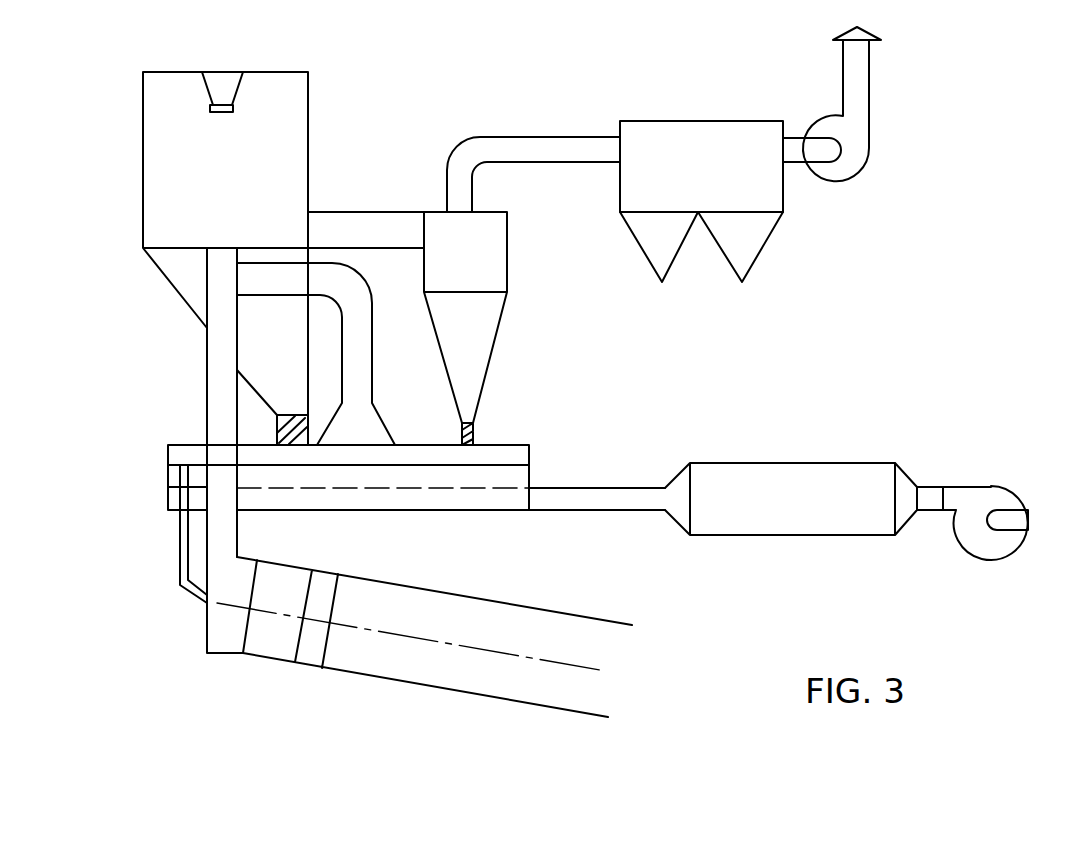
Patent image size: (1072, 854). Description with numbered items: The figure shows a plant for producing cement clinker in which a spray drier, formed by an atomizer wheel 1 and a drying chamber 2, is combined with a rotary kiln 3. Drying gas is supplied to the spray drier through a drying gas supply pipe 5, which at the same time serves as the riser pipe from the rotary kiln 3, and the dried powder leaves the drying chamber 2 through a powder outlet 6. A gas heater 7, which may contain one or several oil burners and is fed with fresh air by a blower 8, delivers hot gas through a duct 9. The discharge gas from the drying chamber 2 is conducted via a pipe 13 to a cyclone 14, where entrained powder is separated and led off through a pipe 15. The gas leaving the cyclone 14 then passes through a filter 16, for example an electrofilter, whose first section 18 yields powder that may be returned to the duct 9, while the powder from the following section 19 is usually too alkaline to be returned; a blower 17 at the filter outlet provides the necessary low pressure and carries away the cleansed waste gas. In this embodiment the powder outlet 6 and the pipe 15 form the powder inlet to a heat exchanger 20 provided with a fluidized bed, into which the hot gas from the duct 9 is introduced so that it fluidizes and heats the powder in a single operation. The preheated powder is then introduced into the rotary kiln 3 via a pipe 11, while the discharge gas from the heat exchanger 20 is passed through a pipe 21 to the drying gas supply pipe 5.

The atomizer wheel 1 is at (232, 78).
The drying chamber 2 is at (300, 134).
The rotary kiln 3 is at (403, 606).
The drying gas supply pipe 5 is at (214, 357).
The powder outlet 6 is at (278, 435).
The gas heater 7 is at (823, 472).
The blower 8 is at (996, 496).
The duct 9 is at (571, 504).
The pipe 11 is at (183, 531).
The pipe 13 is at (370, 224).
The cyclone 14 is at (496, 253).
The pipe 15 is at (471, 434).
The filter 16 is at (702, 128).
The blower 17 is at (860, 144).
The first filter section 18 is at (656, 266).
The following filter section 19 is at (736, 266).
The heat exchanger 20 is at (507, 482).
The pipe 21 is at (358, 378).